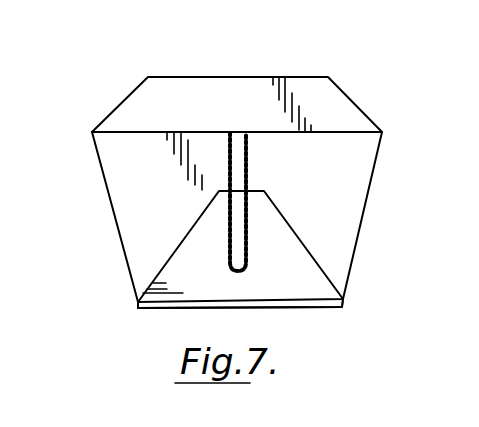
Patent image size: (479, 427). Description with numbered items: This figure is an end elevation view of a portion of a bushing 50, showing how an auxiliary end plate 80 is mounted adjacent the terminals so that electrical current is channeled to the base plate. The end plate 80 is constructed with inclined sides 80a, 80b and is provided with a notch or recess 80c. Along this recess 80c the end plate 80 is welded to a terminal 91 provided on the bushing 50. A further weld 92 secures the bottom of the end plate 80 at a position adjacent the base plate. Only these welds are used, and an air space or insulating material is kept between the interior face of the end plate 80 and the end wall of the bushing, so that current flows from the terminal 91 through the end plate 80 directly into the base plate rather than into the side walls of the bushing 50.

The bushing 50 is at (377, 262).
The end plate 80 is at (283, 243).
The inclined side 80a is at (190, 231).
The inclined side 80b is at (286, 218).
The notch or recess 80c is at (230, 256).
The terminal 91 is at (240, 131).
The weld 92 is at (323, 310).